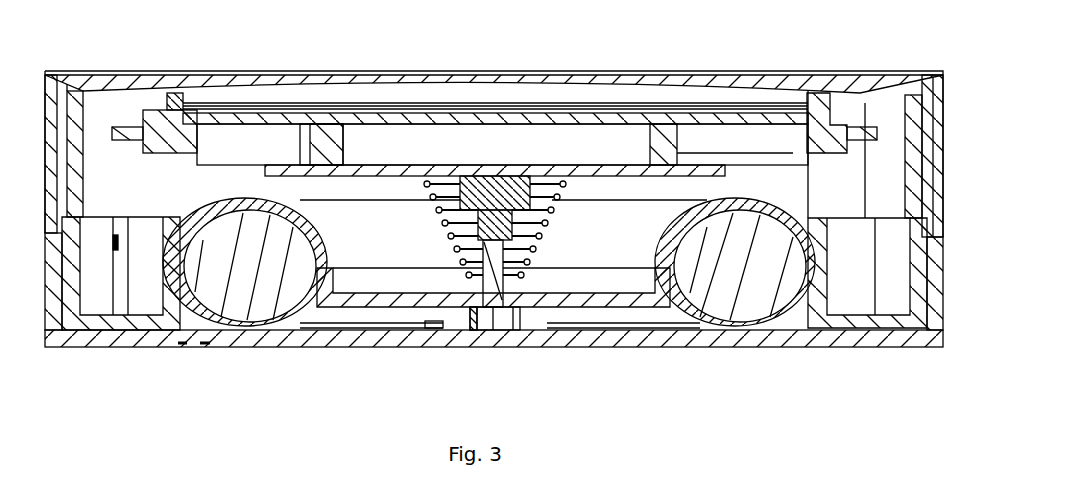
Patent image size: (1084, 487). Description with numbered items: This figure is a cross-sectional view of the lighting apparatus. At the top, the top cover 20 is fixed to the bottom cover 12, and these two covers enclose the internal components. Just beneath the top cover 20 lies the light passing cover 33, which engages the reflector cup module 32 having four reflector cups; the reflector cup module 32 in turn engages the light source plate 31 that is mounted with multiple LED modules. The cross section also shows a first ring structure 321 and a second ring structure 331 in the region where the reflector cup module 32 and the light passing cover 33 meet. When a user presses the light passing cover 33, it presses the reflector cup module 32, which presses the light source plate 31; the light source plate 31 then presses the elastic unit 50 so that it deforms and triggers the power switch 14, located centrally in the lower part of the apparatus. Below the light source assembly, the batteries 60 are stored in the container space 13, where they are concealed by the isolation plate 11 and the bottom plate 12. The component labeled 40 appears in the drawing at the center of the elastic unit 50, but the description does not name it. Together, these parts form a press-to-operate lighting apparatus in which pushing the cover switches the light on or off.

The isolation plate 11 is at (562, 307).
The bottom cover 12 is at (681, 338).
The container space 13 is at (805, 245).
The power switch 14 is at (488, 307).
The top cover 20 is at (102, 92).
The light source plate 31 is at (658, 125).
The reflector cup module 32 is at (335, 120).
The light passing cover 33 is at (239, 95).
The first ring structure 321 is at (813, 130).
The second ring structure 331 is at (840, 132).
The iron core 40 is at (487, 176).
The elastic unit 50 is at (553, 185).
The batteries 60 is at (240, 283).